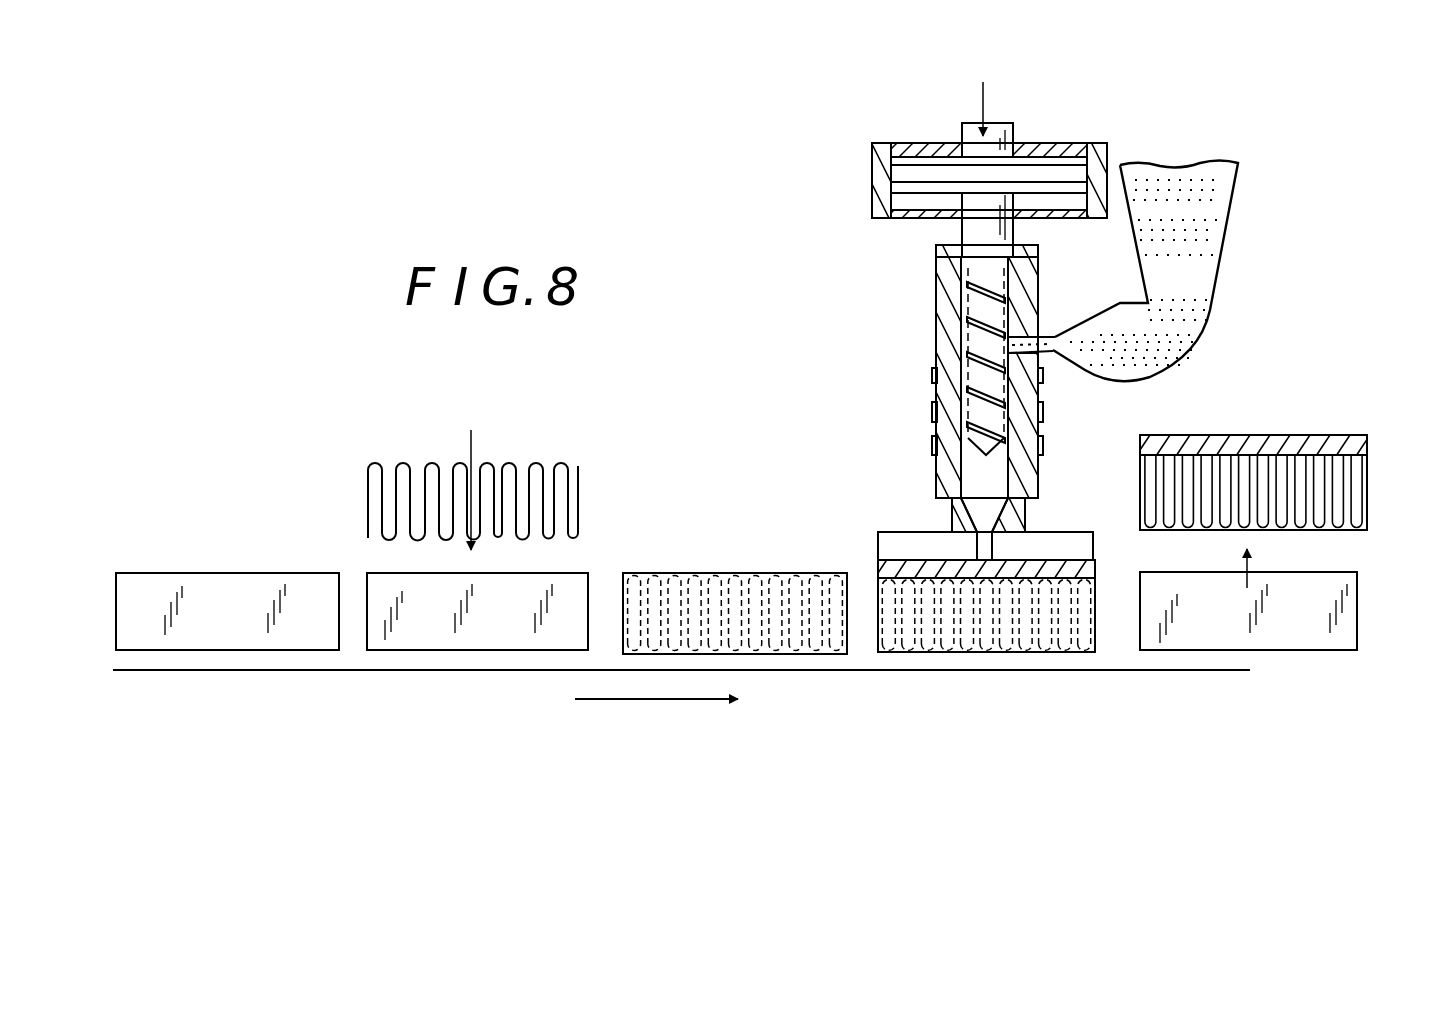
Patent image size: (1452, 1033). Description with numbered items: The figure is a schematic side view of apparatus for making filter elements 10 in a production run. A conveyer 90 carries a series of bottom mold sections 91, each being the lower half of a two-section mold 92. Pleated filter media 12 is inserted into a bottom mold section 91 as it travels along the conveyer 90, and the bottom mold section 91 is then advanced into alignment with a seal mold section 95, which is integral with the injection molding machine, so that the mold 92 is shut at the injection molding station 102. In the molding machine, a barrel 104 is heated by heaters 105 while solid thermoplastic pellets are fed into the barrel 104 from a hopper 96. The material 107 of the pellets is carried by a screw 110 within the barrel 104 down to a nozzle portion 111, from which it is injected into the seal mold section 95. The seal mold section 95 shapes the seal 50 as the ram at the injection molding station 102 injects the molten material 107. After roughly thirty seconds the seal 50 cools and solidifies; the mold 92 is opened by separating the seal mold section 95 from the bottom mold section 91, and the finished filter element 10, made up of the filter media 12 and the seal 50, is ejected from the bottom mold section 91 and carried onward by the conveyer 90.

The filter element 10 is at (1372, 504).
The pleated filter media 12 is at (588, 496).
The seal 50 is at (1097, 578).
The conveyer 90 is at (917, 256).
The bottom mold section 91 is at (220, 637).
The two-section mold 92 is at (998, 65).
The seal mold section 95 is at (1095, 535).
The hopper 96 is at (1223, 267).
The injection molding station 102 is at (1013, 232).
The barrel 104 is at (950, 348).
The heaters 105 is at (925, 390).
The thermosetting material 107 is at (1203, 287).
The screw 110 is at (972, 311).
The nozzle portion 111 is at (988, 540).